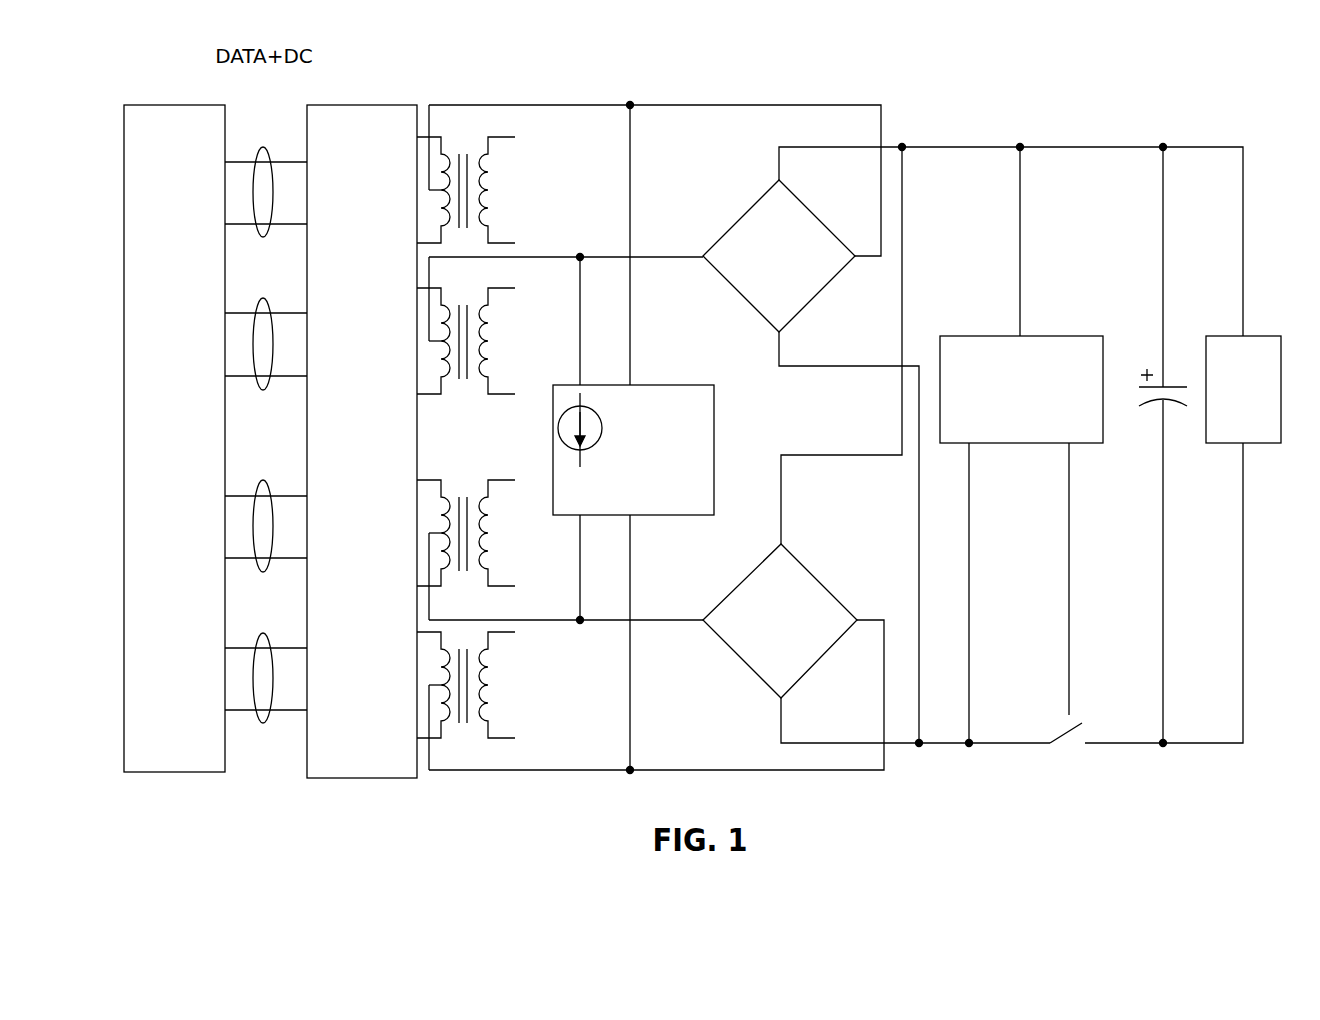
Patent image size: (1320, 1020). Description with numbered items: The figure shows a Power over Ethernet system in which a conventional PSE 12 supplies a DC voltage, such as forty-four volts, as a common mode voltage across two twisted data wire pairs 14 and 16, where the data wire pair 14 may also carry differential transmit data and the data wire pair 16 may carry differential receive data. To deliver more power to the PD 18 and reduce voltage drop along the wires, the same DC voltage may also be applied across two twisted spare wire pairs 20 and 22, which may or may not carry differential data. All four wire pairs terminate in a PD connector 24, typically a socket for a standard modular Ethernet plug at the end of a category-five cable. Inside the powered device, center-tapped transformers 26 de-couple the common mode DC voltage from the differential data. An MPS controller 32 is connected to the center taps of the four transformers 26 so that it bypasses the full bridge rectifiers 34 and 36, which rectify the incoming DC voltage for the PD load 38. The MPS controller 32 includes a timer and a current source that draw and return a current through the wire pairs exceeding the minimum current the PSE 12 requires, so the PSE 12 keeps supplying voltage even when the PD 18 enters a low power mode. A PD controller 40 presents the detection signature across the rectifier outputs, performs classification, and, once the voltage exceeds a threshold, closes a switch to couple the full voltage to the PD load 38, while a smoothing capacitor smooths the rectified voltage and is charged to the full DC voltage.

The PSE 12 is at (189, 772).
The data wire pair 14 is at (263, 147).
The data wire pair 16 is at (263, 298).
The PD 18 is at (617, 80).
The spare wire pair 20 is at (263, 480).
The spare wire pair 22 is at (263, 634).
The PD connector 24 is at (385, 778).
The center-tapped transformers 26 is at (527, 195).
The MPS controller 32 is at (714, 447).
The full bridge rectifier 34 is at (729, 230).
The full bridge rectifier 36 is at (725, 598).
The PD load 38 is at (1267, 336).
The PD controller 40 is at (970, 336).